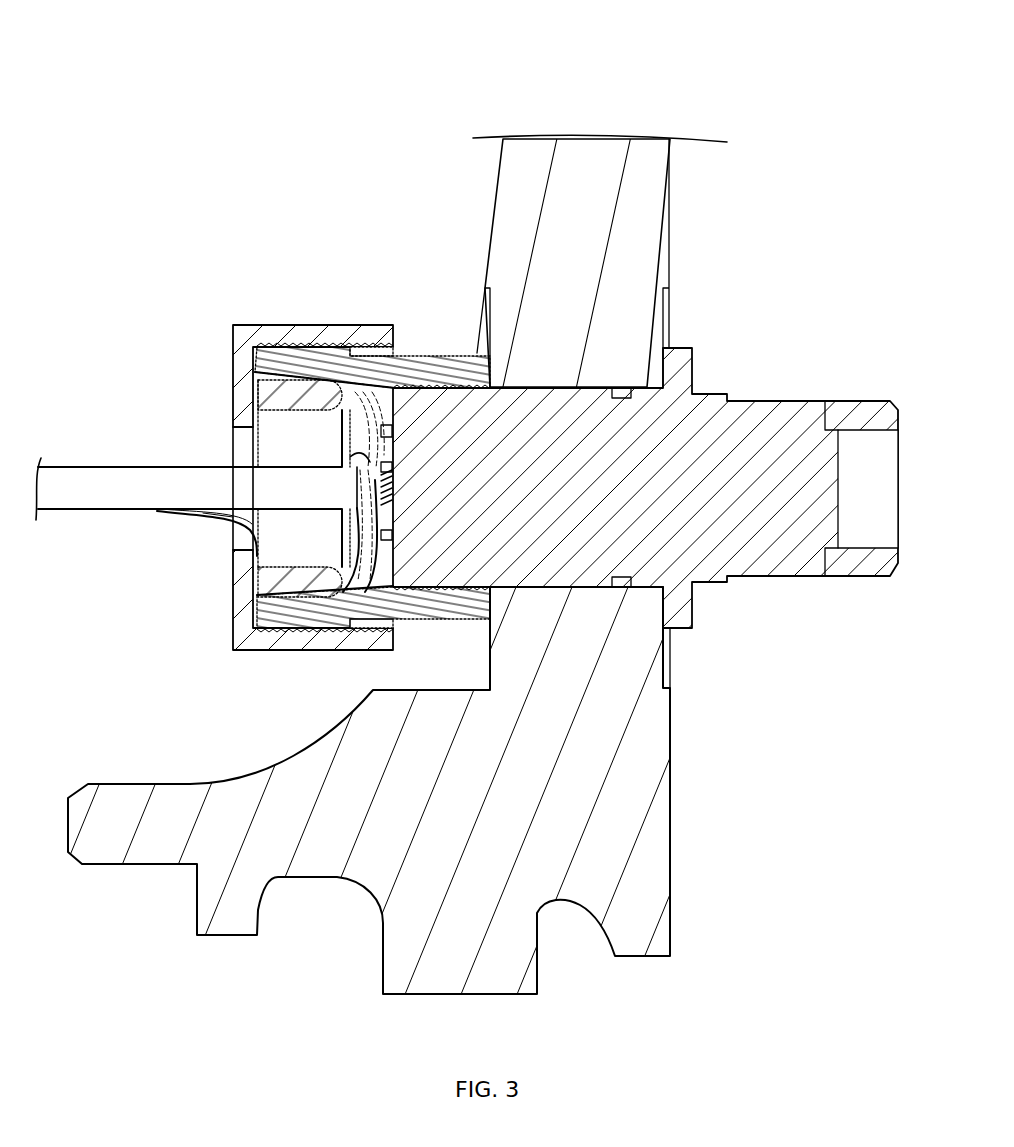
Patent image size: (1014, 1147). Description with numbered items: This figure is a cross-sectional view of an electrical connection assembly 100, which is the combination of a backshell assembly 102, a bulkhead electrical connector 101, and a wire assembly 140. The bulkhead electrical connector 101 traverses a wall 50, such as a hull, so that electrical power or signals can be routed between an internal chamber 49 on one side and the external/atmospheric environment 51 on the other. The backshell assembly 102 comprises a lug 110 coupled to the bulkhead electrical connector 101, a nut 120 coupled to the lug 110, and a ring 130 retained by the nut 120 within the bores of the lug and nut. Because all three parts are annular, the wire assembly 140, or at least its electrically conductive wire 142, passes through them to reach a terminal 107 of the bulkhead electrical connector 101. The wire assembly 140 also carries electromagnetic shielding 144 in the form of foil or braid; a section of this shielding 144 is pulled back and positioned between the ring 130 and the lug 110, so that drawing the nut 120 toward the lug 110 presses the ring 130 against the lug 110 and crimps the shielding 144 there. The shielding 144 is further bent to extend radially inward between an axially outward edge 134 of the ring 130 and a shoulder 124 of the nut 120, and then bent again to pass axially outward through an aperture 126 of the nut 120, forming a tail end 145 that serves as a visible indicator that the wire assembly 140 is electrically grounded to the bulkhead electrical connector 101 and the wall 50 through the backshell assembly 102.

The electrical connection assembly 100 is at (190, 62).
The wall 50 is at (657, 165).
The internal chamber 49 is at (462, 223).
The external/atmospheric environment 51 is at (742, 223).
The bulkhead electrical connector 101 is at (699, 384).
The backshell assembly 102 is at (482, 273).
The lug 110 is at (432, 350).
The nut 120 is at (247, 315).
The shoulder 124 is at (240, 612).
The aperture 126 is at (243, 432).
The ring 130 is at (252, 386).
The axially outward edge 134 is at (250, 600).
The wire assembly 140 is at (100, 462).
The electrically conductive wire 142 is at (362, 457).
The electromagnetic shielding 144 is at (282, 607).
The tail end 145 is at (212, 513).
The terminal 107 is at (366, 486).